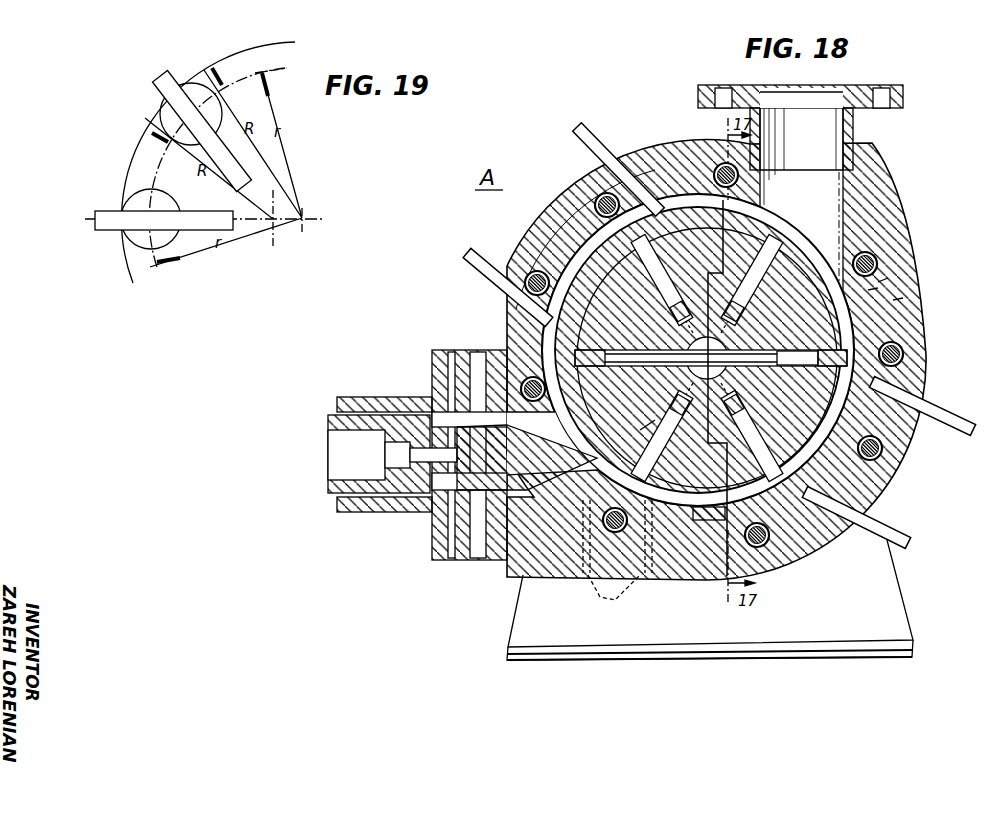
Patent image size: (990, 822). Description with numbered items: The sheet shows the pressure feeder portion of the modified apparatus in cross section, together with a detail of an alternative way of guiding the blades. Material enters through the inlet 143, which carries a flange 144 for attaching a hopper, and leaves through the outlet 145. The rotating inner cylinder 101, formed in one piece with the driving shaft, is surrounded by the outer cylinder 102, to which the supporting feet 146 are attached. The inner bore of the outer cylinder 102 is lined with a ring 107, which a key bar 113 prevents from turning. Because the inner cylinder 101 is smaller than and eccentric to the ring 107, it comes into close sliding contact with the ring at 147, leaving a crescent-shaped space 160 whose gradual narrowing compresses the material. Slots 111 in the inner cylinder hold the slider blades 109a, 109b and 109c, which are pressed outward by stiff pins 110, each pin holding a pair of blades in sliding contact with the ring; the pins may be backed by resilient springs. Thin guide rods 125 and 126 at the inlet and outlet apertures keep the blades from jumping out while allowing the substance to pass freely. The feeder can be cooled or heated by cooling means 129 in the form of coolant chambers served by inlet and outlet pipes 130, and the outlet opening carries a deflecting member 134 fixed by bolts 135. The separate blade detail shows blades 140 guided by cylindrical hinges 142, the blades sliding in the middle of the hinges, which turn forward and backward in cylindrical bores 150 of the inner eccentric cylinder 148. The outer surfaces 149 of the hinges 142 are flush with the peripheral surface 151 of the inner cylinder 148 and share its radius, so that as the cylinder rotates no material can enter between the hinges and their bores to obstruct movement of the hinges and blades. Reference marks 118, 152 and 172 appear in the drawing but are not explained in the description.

In FIG. 18, the inner cylinder 101 is at (862, 476).
In FIG. 18, the outer cylinder 102 is at (903, 298).
In FIG. 18, the ring 107 is at (703, 195).
In FIG. 18, the slider blade 109a is at (655, 333).
In FIG. 18, the slider blade 109b is at (652, 256).
In FIG. 18, the slider blade 109c is at (780, 235).
In FIG. 18, the stiff pin 110 is at (735, 366).
In FIG. 18, the slot 111 is at (600, 367).
In FIG. 18, the key bar 113 is at (700, 575).
In FIG. 18, the bolt 118 is at (595, 196).
In FIG. 18, the guide rod 125 is at (648, 422).
In FIG. 18, the guide rod 126 is at (888, 278).
In FIG. 18, the cooling means 129 is at (555, 222).
In FIG. 18, the inlet and outlet pipe 130 is at (605, 143).
In FIG. 18, the deflecting member 134 is at (563, 520).
In FIG. 18, the bolt 135 is at (614, 595).
In FIG. 19, the blade 140 is at (165, 76).
In FIG. 19, the cylindrical hinge 142 is at (200, 70).
In FIG. 18, the inlet 143 is at (855, 128).
In FIG. 18, the flange 144 is at (903, 94).
In FIG. 18, the outlet 145 is at (527, 451).
In FIG. 18, the supporting foot 146 is at (508, 650).
In FIG. 18, the close sliding contact 147 is at (533, 257).
In FIG. 19, the inner eccentric cylinder 148 is at (257, 52).
In FIG. 19, the outer surface 149 is at (160, 103).
In FIG. 19, the cylindrical bore 150 is at (152, 133).
In FIG. 19, the peripheral surface 151 is at (132, 160).
In FIG. 18, the hub 152 is at (726, 350).
In FIG. 18, the crescent-shaped space 160 is at (878, 288).
In FIG. 18, the inlet flange 172 is at (432, 395).